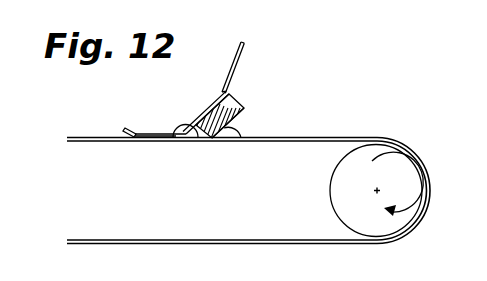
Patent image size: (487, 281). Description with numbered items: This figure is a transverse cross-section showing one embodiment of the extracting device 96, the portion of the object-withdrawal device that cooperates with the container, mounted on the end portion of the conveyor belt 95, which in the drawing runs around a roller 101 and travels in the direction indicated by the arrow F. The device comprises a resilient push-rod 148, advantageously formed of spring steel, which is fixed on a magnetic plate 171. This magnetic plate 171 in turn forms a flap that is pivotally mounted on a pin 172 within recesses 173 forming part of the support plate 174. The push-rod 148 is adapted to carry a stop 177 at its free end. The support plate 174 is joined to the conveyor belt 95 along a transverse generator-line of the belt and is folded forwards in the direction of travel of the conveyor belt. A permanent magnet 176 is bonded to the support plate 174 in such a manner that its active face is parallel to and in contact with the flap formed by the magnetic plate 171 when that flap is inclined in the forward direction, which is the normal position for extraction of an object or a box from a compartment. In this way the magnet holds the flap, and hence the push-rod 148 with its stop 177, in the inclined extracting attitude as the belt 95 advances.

The conveyor belt 95 is at (75, 145).
The extracting device 96 is at (207, 96).
The roller 101 is at (342, 205).
The resilient push-rod 148 is at (238, 68).
The magnetic plate 171 is at (238, 94).
The pin 172 is at (191, 136).
The recesses 173 is at (185, 131).
The support plate 174 is at (233, 139).
The permanent magnet 176 is at (246, 112).
The stop 177 is at (246, 46).